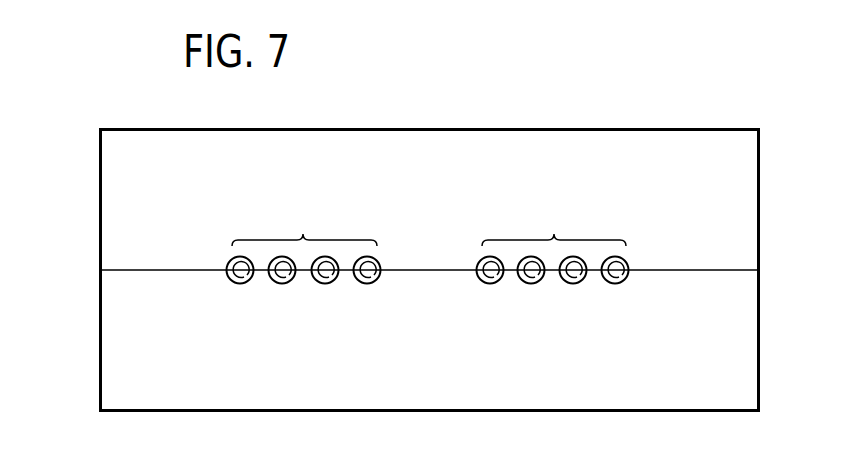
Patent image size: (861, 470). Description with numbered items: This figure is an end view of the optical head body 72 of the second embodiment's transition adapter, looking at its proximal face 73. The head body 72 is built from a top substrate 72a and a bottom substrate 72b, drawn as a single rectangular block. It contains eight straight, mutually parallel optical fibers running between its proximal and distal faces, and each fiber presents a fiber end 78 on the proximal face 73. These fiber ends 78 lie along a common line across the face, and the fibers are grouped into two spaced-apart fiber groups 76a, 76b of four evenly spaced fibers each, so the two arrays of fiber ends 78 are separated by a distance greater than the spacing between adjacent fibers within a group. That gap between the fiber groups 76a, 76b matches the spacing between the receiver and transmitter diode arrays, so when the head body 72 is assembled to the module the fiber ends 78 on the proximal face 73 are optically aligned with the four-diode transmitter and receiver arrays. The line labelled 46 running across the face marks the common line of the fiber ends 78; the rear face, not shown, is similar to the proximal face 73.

The head body 72 is at (98, 208).
The top substrate 72a is at (436, 403).
The bottom substrate 72b is at (436, 135).
The proximal face 73 is at (682, 186).
The reference line 46 is at (380, 268).
The first fiber group 76a is at (304, 222).
The second fiber group 76b is at (554, 222).
The fiber end 78 is at (242, 284).